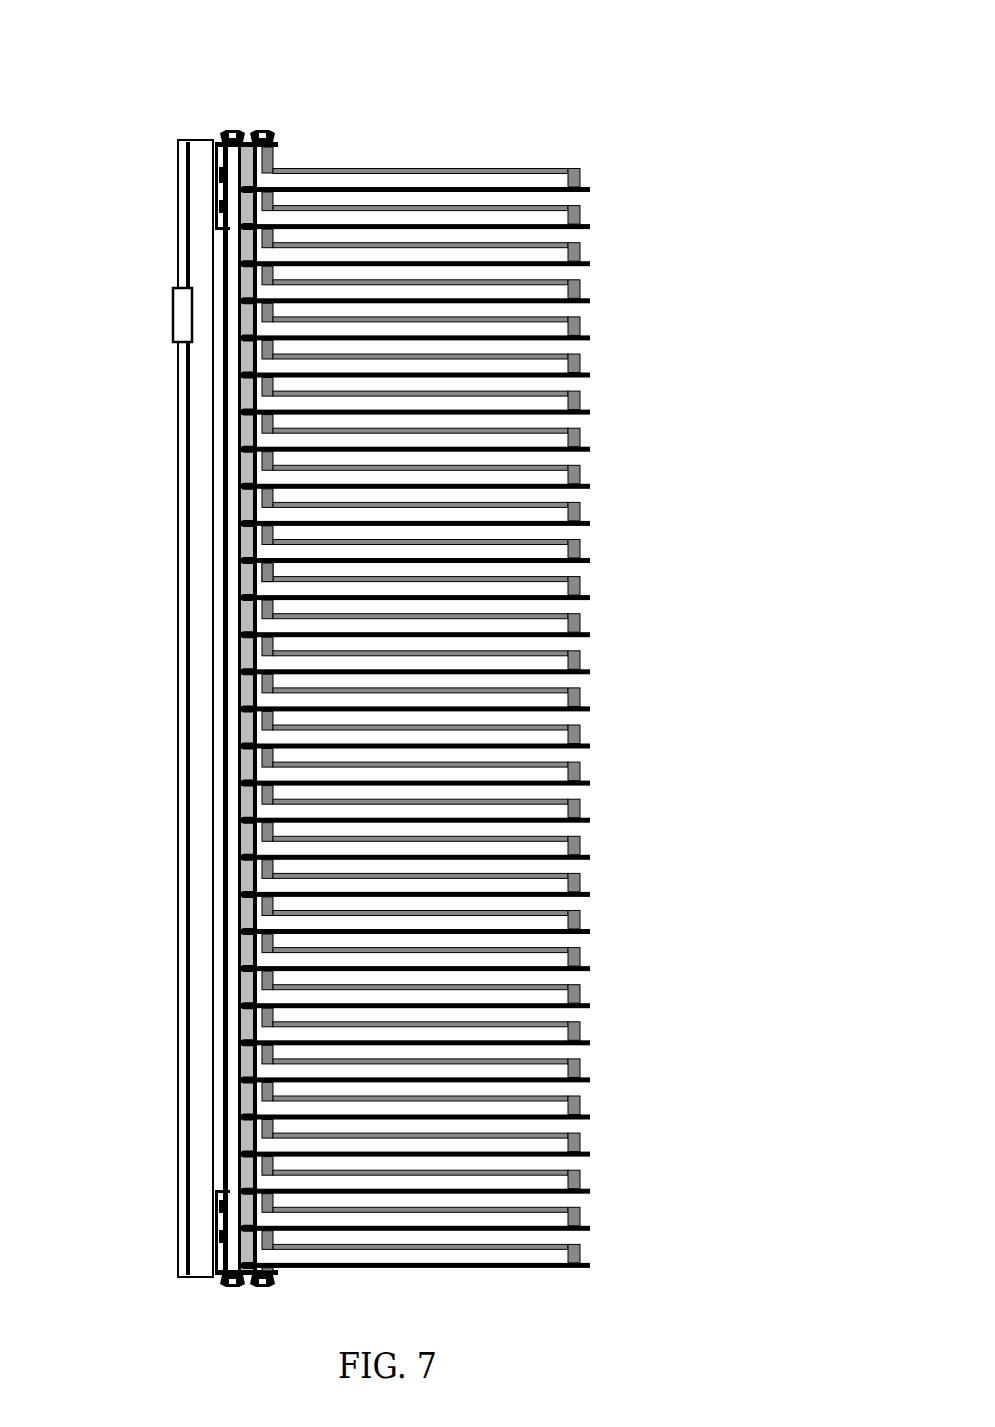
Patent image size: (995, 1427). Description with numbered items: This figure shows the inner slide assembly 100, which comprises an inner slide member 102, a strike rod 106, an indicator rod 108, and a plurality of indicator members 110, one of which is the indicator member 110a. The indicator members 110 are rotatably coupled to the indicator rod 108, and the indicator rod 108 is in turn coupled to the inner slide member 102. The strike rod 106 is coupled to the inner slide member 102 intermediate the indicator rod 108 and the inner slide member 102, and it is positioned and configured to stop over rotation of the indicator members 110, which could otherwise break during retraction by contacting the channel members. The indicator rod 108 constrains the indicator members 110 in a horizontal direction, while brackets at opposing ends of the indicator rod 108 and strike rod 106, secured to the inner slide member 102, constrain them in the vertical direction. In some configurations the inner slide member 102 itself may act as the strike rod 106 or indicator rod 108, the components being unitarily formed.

The inner slide assembly 100 is at (451, 652).
The inner slide member 102 is at (148, 257).
The strike rod 106 is at (228, 465).
The indicator rod 108 is at (268, 568).
The plurality of indicator members 110 is at (468, 689).
The indicator member 110a is at (473, 142).